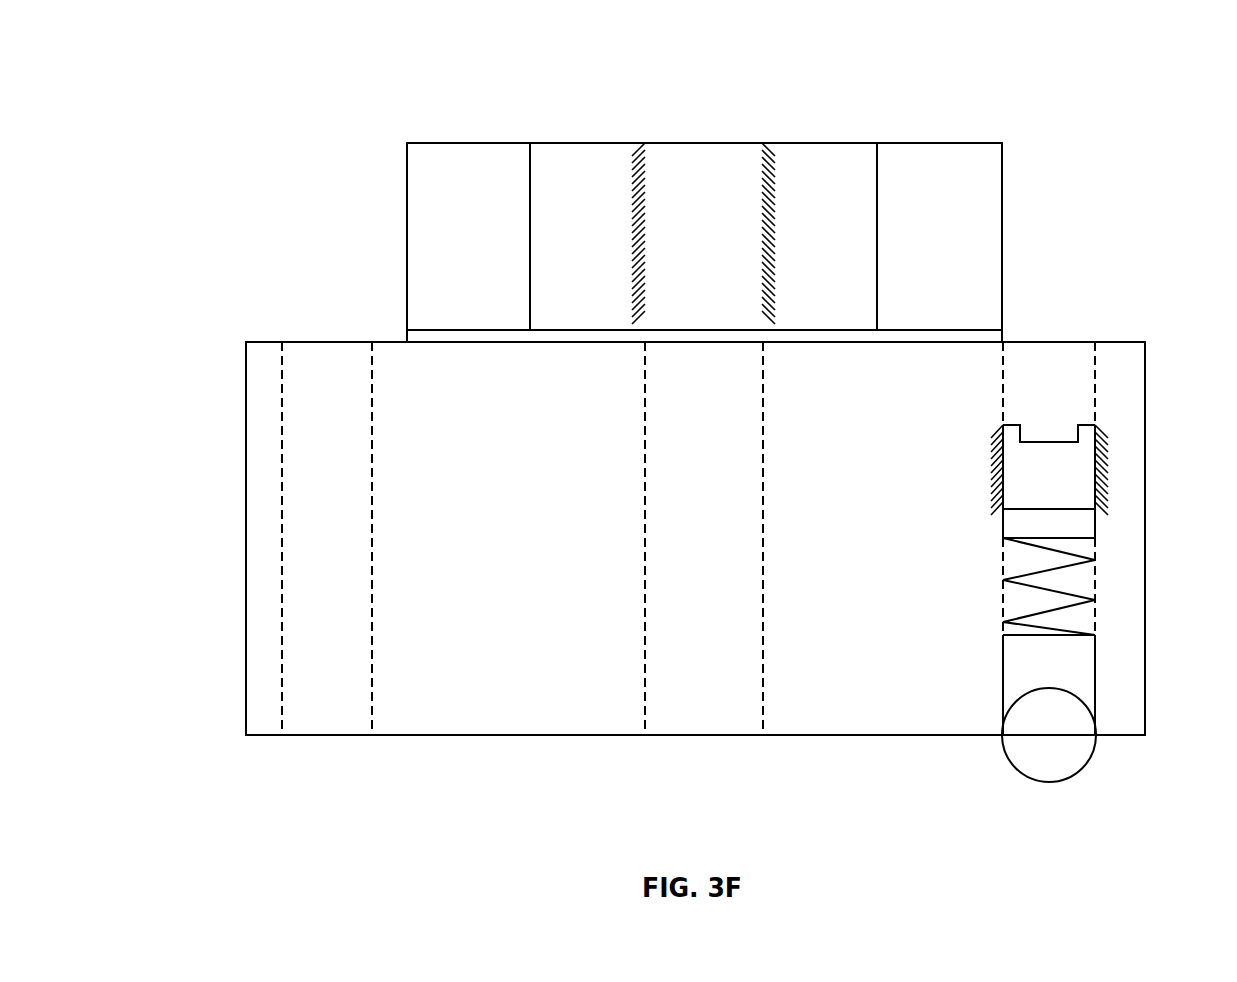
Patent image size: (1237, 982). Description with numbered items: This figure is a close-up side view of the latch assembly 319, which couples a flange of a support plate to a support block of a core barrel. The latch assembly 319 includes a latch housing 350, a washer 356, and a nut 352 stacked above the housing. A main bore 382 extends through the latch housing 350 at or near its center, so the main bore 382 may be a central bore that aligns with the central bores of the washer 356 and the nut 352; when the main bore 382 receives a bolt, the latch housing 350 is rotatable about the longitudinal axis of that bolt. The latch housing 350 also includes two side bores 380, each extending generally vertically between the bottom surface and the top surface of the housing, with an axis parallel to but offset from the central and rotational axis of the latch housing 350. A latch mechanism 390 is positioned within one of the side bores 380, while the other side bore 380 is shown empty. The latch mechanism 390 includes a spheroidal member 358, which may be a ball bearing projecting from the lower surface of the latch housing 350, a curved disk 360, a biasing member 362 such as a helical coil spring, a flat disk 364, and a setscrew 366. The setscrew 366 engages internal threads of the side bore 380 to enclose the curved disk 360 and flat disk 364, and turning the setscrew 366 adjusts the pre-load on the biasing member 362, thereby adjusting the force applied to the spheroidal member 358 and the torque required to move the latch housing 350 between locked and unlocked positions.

The latch assembly 319 is at (350, 83).
The latch housing 350 is at (1145, 378).
The nut 352 is at (1002, 170).
The washer 356 is at (1003, 336).
The spheroidal member 358 is at (1070, 763).
The curved disk 360 is at (1087, 664).
The biasing member 362 is at (1085, 562).
The flat disk 364 is at (1087, 535).
The setscrew 366 is at (1073, 480).
The side bore 380 is at (282, 548).
The main bore 382 is at (763, 664).
The latch mechanism 390 is at (985, 424).